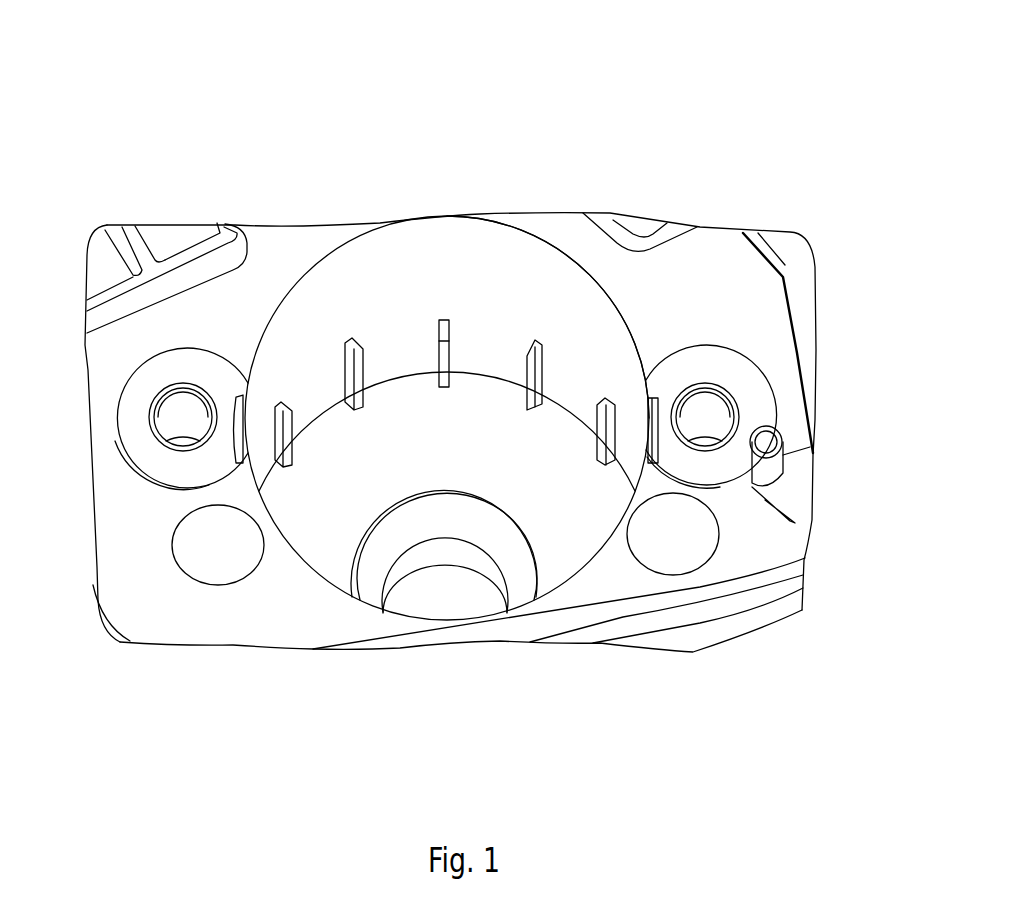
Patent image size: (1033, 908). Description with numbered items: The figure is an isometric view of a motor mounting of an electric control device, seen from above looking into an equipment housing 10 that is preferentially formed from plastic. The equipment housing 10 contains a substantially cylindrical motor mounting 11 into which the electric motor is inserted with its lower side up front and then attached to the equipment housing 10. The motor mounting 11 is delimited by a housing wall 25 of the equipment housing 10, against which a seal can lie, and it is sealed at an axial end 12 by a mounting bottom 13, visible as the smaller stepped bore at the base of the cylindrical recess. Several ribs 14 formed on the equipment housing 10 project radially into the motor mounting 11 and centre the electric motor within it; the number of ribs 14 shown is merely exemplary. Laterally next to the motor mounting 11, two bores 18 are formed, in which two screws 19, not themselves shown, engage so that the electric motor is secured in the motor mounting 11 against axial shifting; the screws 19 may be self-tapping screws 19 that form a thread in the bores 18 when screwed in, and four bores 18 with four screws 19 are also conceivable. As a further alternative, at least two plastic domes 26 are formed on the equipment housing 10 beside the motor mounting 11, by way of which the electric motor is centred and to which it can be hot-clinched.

The equipment housing 10 is at (818, 178).
The motor mounting 11 is at (437, 260).
The axial end 12 is at (558, 443).
The mounting bottom 13 is at (454, 610).
The ribs 14 is at (447, 386).
The bores 18 is at (181, 413).
The screws 19 is at (148, 406).
The housing wall 25 is at (533, 263).
The plastic domes 26 is at (173, 552).